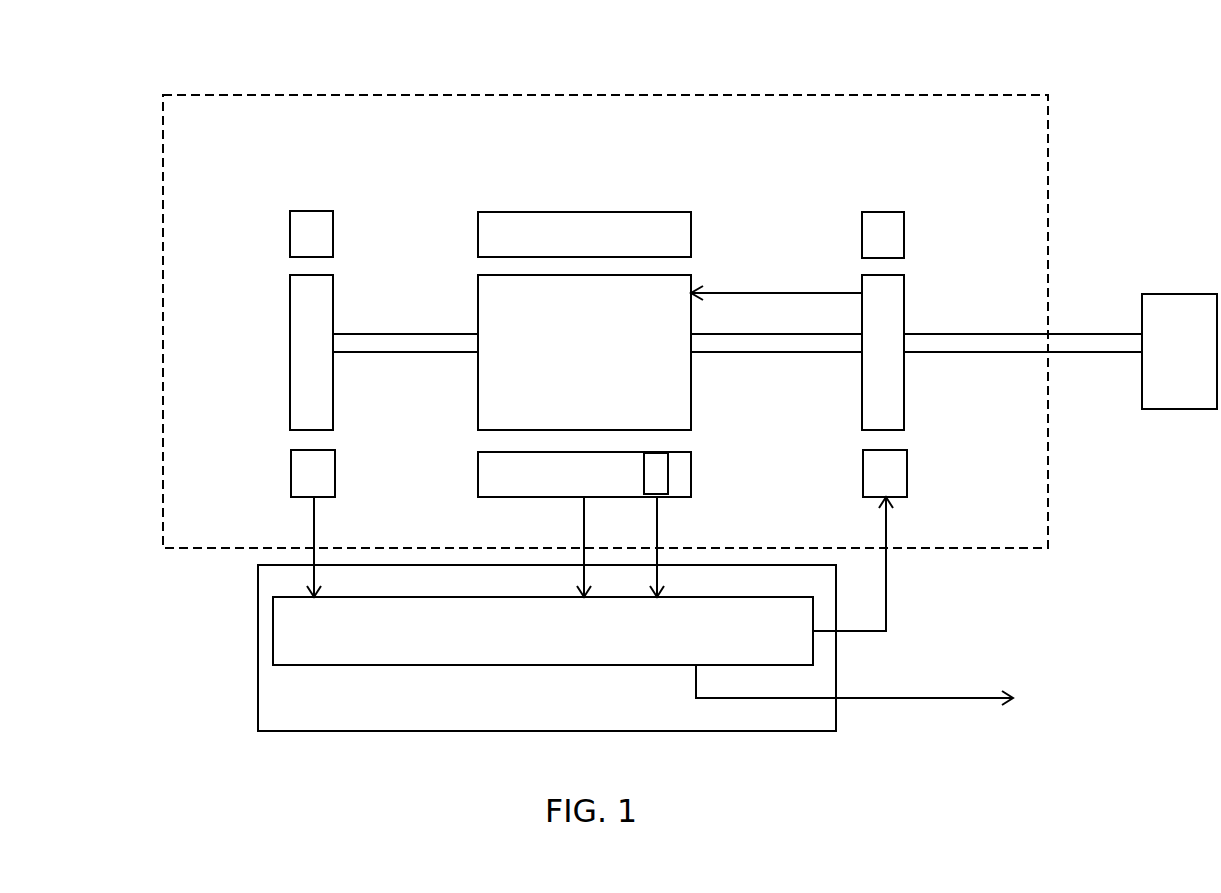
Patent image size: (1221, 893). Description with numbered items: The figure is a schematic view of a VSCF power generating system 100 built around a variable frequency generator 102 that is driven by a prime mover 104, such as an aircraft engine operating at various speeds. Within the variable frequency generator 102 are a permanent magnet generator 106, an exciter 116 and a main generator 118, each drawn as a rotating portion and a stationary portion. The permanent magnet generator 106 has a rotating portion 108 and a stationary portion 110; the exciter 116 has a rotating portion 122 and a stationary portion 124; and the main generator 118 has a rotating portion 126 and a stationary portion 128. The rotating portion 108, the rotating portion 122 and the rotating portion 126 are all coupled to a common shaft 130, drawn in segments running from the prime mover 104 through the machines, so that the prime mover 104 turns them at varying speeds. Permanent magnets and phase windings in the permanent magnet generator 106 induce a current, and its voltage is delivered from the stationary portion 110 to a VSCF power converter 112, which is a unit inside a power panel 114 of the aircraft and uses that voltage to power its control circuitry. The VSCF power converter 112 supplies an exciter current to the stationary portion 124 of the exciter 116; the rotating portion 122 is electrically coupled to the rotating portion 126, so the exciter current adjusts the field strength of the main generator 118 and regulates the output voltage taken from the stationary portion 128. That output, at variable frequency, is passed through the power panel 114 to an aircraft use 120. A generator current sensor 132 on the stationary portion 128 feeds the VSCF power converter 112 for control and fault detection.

The VSCF power generating system 100 is at (299, 79).
The variable frequency generator 102 is at (985, 95).
The prime mover 104 is at (1177, 294).
The permanent magnet generator 106 is at (289, 233).
The rotating portion 108 is at (290, 357).
The stationary portion 110 is at (291, 472).
The VSCF power converter 112 is at (543, 631).
The power panel 114 is at (547, 648).
The exciter 116 is at (907, 219).
The main generator 118 is at (692, 218).
The aircraft use 120 is at (924, 696).
The rotating portion 122 is at (862, 377).
The stationary portion 124 is at (905, 485).
The rotating portion 126 is at (478, 370).
The stationary portion 128 is at (478, 475).
The common shaft 130 is at (372, 333).
The generator current sensor 132 is at (668, 462).